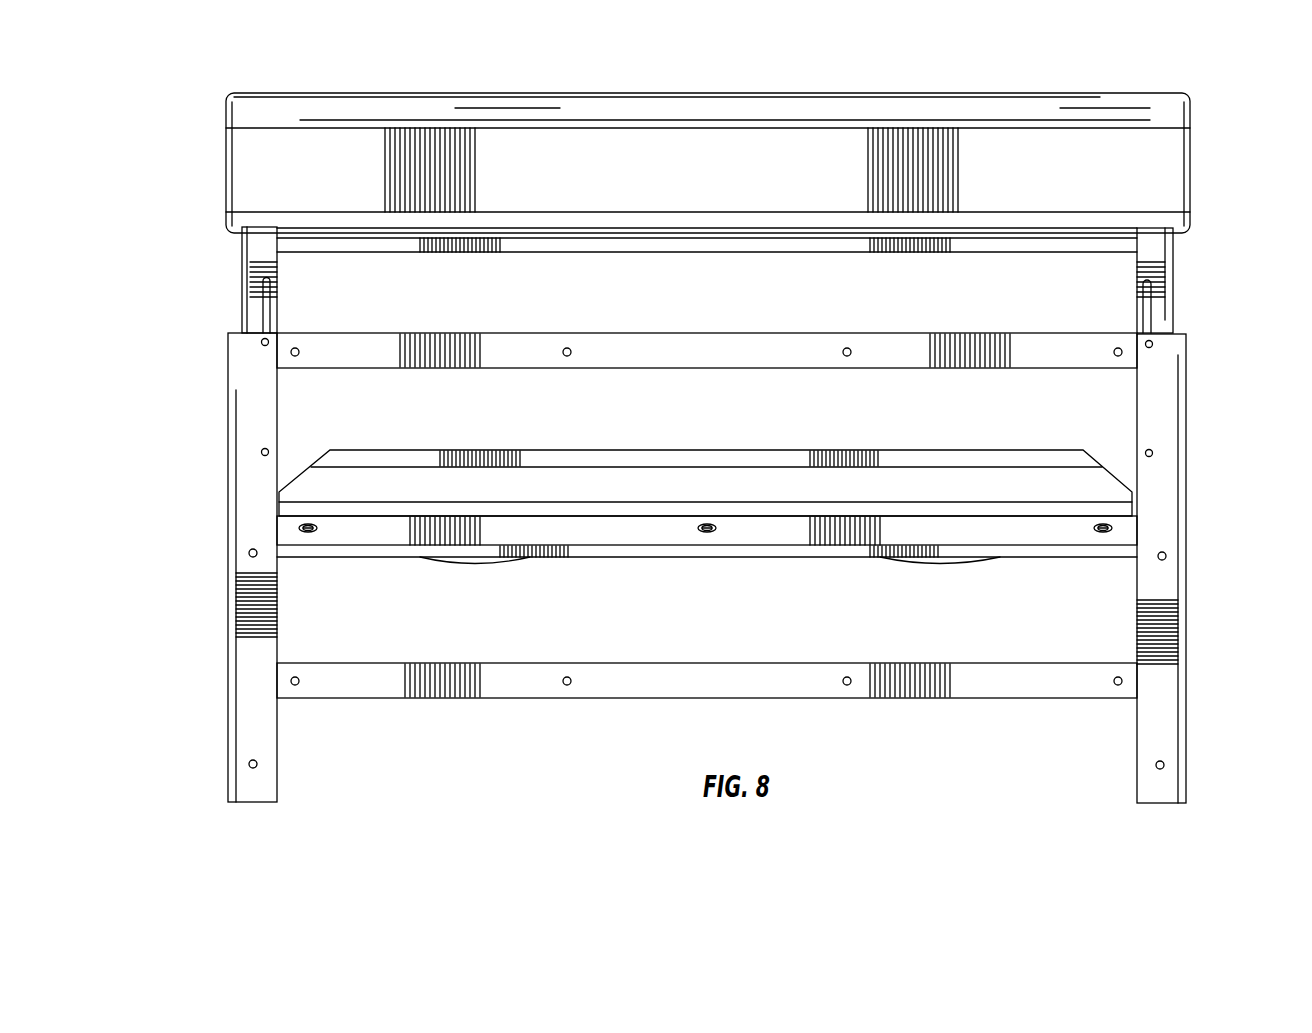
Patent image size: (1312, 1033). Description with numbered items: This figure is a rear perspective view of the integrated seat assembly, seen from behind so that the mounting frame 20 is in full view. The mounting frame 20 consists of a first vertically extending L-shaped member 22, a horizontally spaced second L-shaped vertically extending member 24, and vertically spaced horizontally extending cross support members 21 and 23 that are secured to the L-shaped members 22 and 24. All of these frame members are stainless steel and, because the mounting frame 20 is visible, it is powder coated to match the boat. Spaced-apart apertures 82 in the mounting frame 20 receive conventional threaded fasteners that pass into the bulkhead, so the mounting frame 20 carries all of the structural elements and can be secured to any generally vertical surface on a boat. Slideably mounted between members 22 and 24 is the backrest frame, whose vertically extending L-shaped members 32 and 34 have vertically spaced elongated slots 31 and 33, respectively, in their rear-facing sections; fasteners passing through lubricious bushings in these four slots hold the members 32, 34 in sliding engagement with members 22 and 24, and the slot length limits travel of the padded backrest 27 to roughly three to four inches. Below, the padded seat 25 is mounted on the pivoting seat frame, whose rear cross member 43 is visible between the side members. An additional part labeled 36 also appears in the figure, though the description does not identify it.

The mounting frame 20 is at (719, 432).
The cross support member 21 is at (900, 368).
The first vertically extending L-shaped member 22 is at (1158, 511).
The cross support member 23 is at (940, 698).
The second L-shaped vertically extending member 24 is at (253, 592).
The padded seat 25 is at (612, 487).
The padded backrest 27 is at (1097, 93).
The elongated slot 31 is at (1147, 308).
The L-shaped member 32 is at (1175, 300).
The elongated slot 33 is at (267, 310).
The L-shaped member 34 is at (241, 268).
The backrest support bracket 36 is at (1178, 264).
The rear cross member 43 is at (602, 530).
The apertures 82 is at (298, 349).